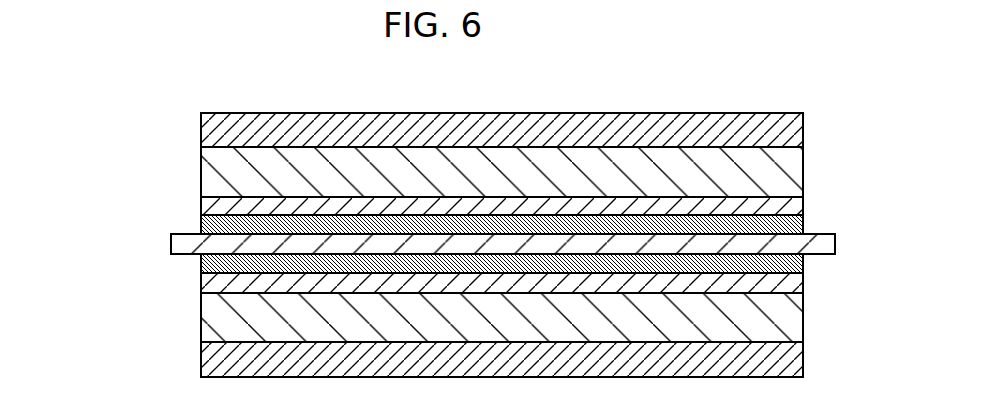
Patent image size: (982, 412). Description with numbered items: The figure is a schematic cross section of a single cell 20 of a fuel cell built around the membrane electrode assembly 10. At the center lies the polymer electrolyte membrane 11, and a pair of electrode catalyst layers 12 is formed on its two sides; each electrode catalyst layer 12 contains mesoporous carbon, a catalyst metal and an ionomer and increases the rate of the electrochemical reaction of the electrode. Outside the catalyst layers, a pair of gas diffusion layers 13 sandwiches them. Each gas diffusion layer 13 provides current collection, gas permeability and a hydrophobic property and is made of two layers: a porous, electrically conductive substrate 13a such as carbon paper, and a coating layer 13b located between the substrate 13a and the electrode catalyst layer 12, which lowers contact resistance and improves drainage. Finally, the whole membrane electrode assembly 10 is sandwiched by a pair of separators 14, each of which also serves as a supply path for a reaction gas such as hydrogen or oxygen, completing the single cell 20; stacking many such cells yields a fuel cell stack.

The single cell 20 is at (435, 211).
The membrane electrode assembly 10 is at (435, 250).
The polymer electrolyte membrane 11 is at (172, 242).
The electrode catalyst layer 12 is at (201, 228).
The gas diffusion layer 13 is at (440, 250).
The substrate 13a is at (201, 182).
The coating layer 13b is at (201, 208).
The separator 14 is at (201, 133).